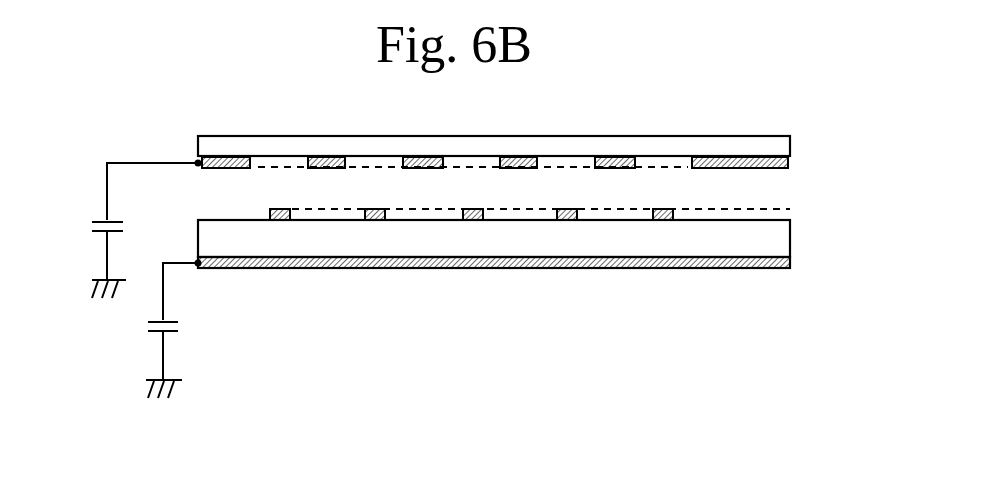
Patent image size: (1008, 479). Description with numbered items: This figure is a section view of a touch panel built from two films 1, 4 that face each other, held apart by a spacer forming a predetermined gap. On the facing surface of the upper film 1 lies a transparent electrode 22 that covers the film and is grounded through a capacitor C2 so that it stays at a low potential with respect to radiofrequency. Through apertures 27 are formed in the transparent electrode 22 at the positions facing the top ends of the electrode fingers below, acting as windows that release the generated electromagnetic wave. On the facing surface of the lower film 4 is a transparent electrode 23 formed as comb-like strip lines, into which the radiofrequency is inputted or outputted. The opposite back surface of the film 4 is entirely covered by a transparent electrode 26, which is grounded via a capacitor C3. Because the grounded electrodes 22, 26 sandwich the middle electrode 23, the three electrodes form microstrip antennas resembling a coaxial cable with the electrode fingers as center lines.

The film 1 is at (606, 150).
The transparent electrode 22 is at (742, 159).
The apertures 27 is at (273, 156).
The film 4 is at (663, 238).
The transparent electrode 23 is at (373, 221).
The transparent electrode 26 is at (492, 261).
The capacitor C2 is at (131, 229).
The capacitor C3 is at (179, 329).